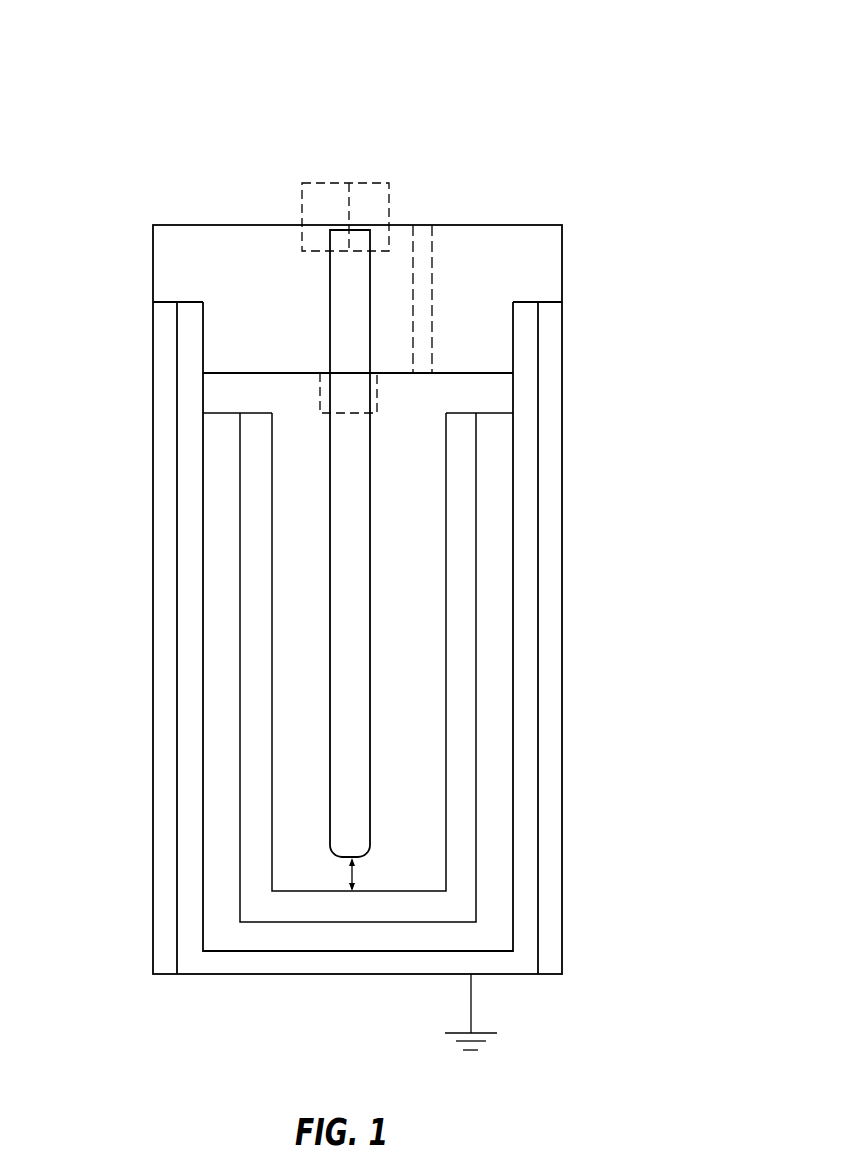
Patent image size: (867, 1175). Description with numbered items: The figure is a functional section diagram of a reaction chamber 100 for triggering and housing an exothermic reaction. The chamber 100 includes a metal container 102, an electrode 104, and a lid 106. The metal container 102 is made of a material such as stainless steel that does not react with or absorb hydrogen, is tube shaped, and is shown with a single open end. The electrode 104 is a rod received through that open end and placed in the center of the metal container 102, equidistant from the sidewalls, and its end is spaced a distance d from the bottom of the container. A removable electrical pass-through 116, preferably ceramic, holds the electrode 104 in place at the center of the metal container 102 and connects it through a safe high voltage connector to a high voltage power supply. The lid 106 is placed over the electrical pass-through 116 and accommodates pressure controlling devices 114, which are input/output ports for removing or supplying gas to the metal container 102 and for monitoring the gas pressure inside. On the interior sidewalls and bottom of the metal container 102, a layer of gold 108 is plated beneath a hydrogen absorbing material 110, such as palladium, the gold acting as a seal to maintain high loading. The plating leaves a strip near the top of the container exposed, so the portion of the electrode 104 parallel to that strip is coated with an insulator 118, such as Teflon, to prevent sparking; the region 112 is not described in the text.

The reaction chamber 100 is at (585, 80).
The metal container 102 is at (523, 887).
The electrode 104 is at (370, 550).
The lid 106 is at (254, 257).
The layer of gold 108 is at (497, 602).
The hydrogen absorbing material 110 is at (462, 646).
The vessel liner wall 112 is at (162, 708).
The pressure controlling devices 114 is at (432, 268).
The removable electrical pass-through 116 is at (375, 183).
The insulator 118 is at (345, 373).